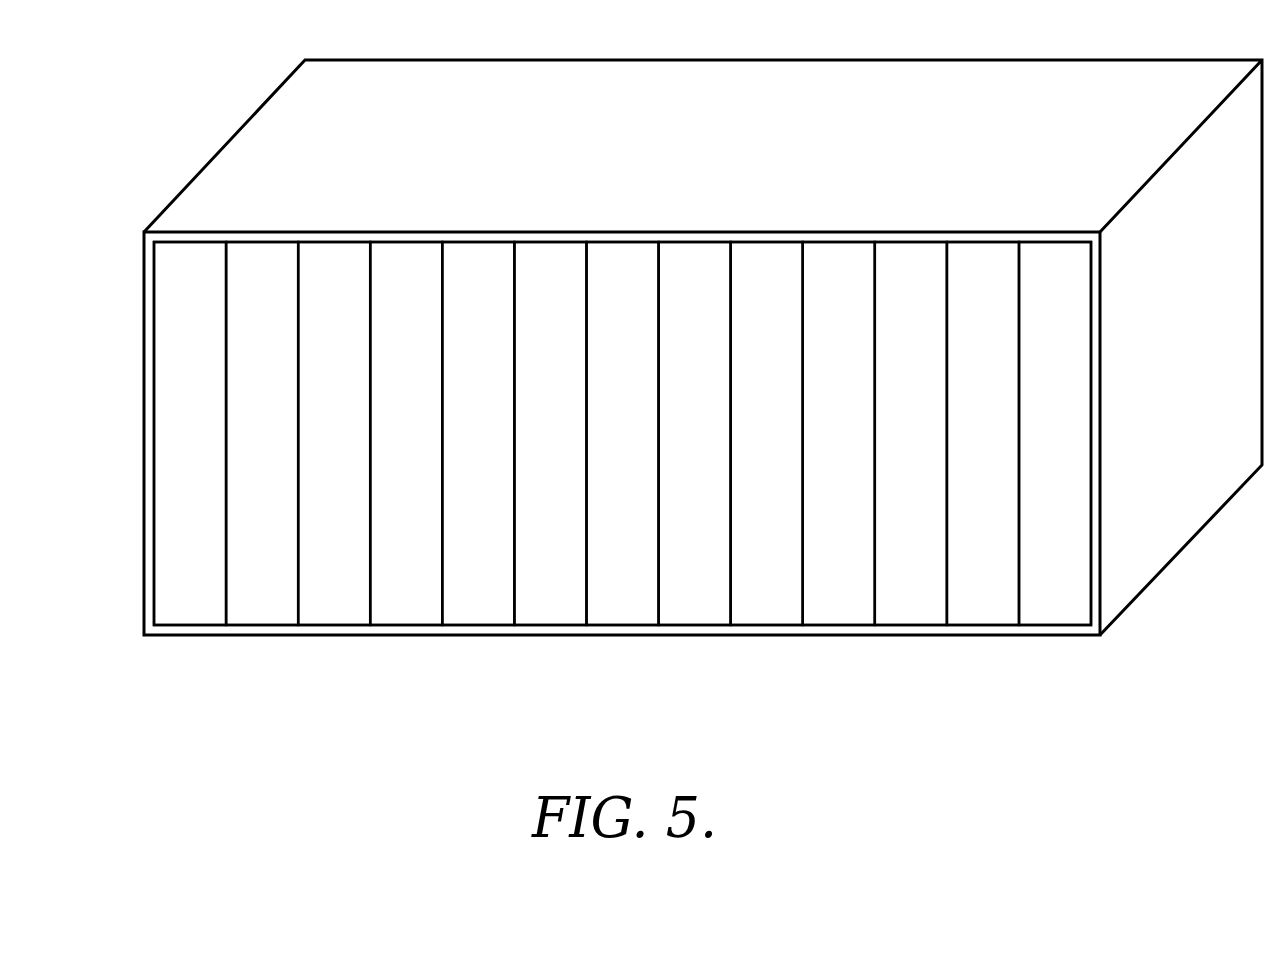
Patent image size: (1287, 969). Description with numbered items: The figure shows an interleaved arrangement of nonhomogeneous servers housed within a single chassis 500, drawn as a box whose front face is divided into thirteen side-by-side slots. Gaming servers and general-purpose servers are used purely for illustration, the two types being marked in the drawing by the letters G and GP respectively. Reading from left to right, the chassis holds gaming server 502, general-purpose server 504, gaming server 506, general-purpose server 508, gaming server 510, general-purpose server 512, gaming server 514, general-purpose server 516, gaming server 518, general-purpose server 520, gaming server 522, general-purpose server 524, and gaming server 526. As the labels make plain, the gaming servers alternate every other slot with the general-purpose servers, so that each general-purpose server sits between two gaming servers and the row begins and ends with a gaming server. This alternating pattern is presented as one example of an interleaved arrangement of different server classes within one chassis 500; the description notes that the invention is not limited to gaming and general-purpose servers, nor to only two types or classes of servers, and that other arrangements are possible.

The chassis 500 is at (143, 518).
The gaming server 502 is at (188, 613).
The general-purpose server 504 is at (258, 613).
The gaming server 506 is at (332, 613).
The general-purpose server 508 is at (402, 613).
The gaming server 510 is at (467, 613).
The general-purpose server 512 is at (547, 613).
The gaming server 514 is at (612, 613).
The general-purpose server 516 is at (692, 613).
The gaming server 518 is at (755, 613).
The general-purpose server 520 is at (835, 613).
The gaming server 522 is at (900, 613).
The general-purpose server 524 is at (978, 613).
The gaming server 526 is at (1045, 613).